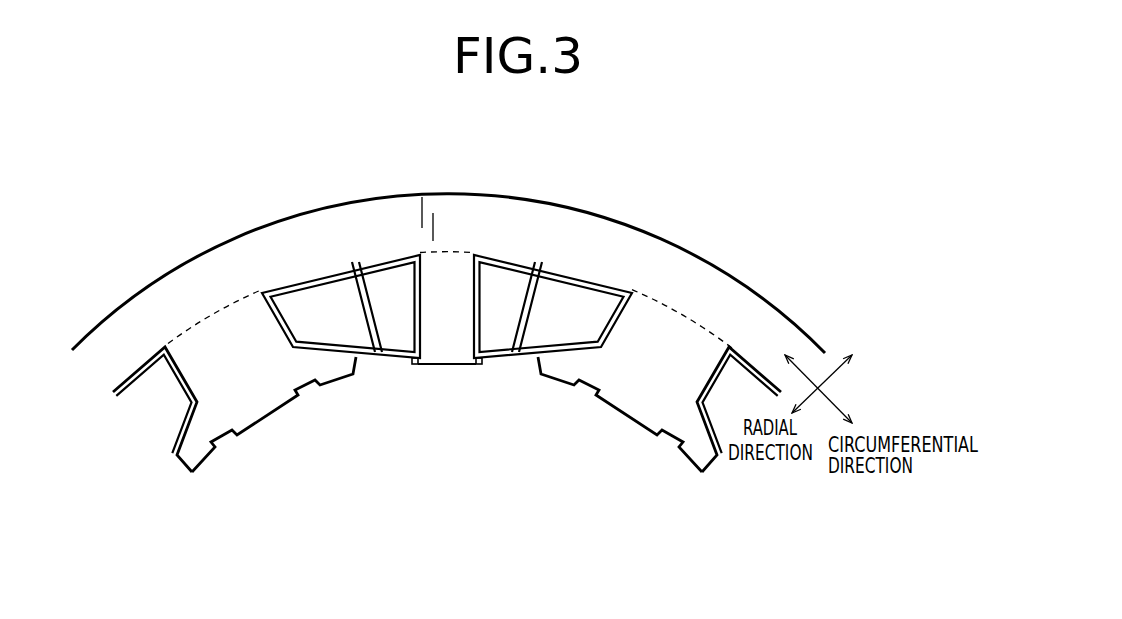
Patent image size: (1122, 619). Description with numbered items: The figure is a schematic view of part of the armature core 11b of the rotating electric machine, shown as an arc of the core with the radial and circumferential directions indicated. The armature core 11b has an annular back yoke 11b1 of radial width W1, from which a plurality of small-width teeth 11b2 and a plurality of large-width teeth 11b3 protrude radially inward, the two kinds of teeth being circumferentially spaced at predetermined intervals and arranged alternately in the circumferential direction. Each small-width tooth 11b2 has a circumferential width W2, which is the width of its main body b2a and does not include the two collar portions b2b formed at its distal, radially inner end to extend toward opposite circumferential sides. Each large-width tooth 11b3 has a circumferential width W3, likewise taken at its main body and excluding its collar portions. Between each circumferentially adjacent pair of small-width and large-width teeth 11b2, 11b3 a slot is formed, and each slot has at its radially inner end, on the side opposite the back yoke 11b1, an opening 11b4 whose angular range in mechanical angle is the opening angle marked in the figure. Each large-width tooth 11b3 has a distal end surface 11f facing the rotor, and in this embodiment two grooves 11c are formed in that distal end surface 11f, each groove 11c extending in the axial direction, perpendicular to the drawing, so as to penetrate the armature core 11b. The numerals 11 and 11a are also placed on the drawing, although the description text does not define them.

The rotor core 11 is at (240, 192).
The permanent magnet 11a is at (395, 310).
The armature core 11b is at (452, 308).
The back yoke 11b1 is at (610, 253).
The small-width tooth 11b2 is at (519, 317).
The large-width tooth 11b3 is at (232, 338).
The opening 11b4 is at (503, 398).
The groove 11c is at (682, 437).
The distal end surface 11f is at (208, 458).
The main body b2a is at (457, 280).
The collar portion b2b is at (481, 353).
The radial width of back yoke W1 is at (317, 210).
The circumferential width of small-width tooth W2 is at (474, 323).
The circumferential width of large-width tooth W3 is at (284, 338).